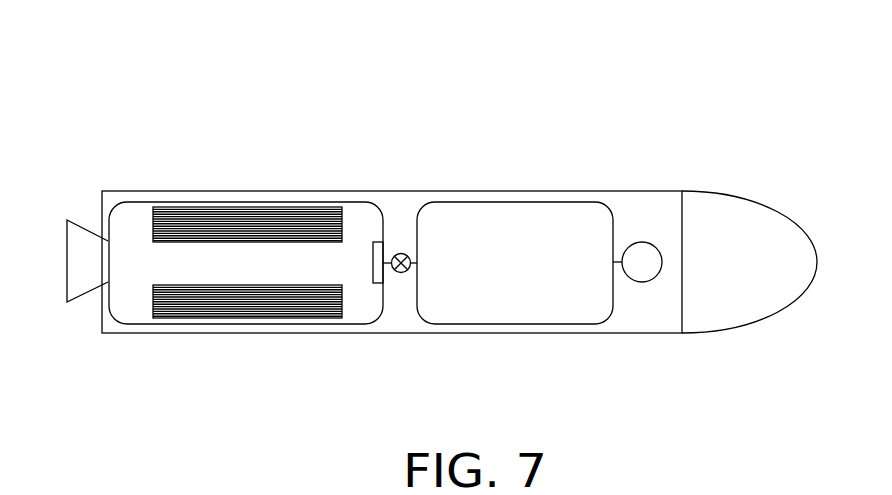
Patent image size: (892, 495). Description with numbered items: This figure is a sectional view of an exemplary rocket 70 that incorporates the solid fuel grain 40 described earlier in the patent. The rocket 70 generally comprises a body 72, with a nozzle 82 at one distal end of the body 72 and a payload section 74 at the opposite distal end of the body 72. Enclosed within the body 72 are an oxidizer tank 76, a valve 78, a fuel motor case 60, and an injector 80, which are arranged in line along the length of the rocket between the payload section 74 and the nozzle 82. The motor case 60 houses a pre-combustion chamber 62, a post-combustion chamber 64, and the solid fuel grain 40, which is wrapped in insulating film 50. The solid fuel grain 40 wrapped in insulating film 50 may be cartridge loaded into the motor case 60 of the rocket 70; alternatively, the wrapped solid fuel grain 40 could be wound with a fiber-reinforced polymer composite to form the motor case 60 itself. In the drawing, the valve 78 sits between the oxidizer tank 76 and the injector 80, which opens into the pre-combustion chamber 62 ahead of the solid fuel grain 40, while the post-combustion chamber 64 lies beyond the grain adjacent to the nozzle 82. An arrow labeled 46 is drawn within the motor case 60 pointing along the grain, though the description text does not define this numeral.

The solid fuel grain 40 is at (262, 222).
The flow path 46 is at (184, 271).
The insulating film 50 is at (185, 204).
The fuel motor case 60 is at (368, 202).
The pre-combustion chamber 62 is at (346, 269).
The post-combustion chamber 64 is at (120, 261).
The rocket 70 is at (658, 121).
The body 72 is at (630, 334).
The payload section 74 is at (757, 312).
The oxidizer tank 76 is at (485, 207).
The valve 78 is at (401, 253).
The injector 80 is at (379, 275).
The nozzle 82 is at (85, 277).